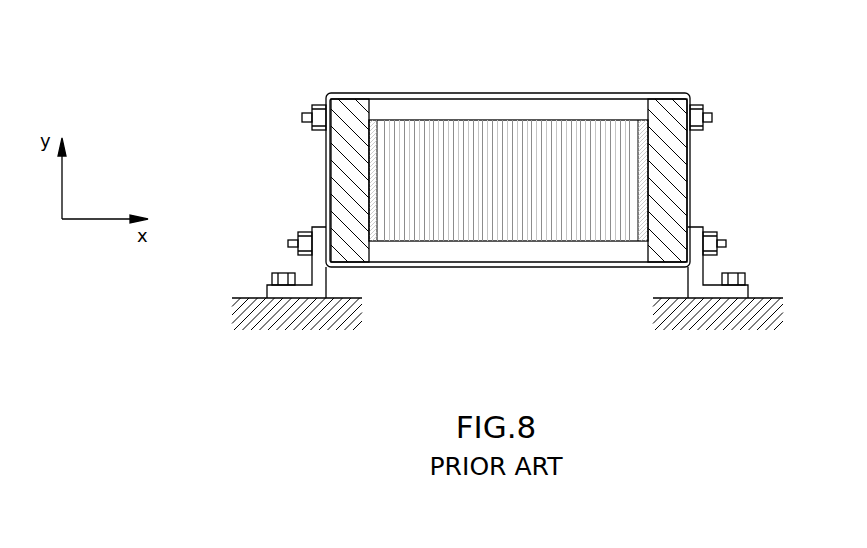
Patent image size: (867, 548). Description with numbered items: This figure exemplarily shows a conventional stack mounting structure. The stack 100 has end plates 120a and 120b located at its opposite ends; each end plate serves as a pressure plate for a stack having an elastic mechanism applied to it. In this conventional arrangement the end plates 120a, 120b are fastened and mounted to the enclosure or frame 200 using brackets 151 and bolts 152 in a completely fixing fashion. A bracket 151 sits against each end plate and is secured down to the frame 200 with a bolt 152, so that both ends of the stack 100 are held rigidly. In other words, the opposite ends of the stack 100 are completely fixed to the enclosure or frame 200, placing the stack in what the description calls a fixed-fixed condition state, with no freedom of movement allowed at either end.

The stack 100 is at (502, 133).
The end plate 120a is at (343, 180).
The end plate 120b is at (667, 180).
The bracket 151 is at (320, 286).
The bolt 152 is at (278, 275).
The frame 200 is at (262, 320).